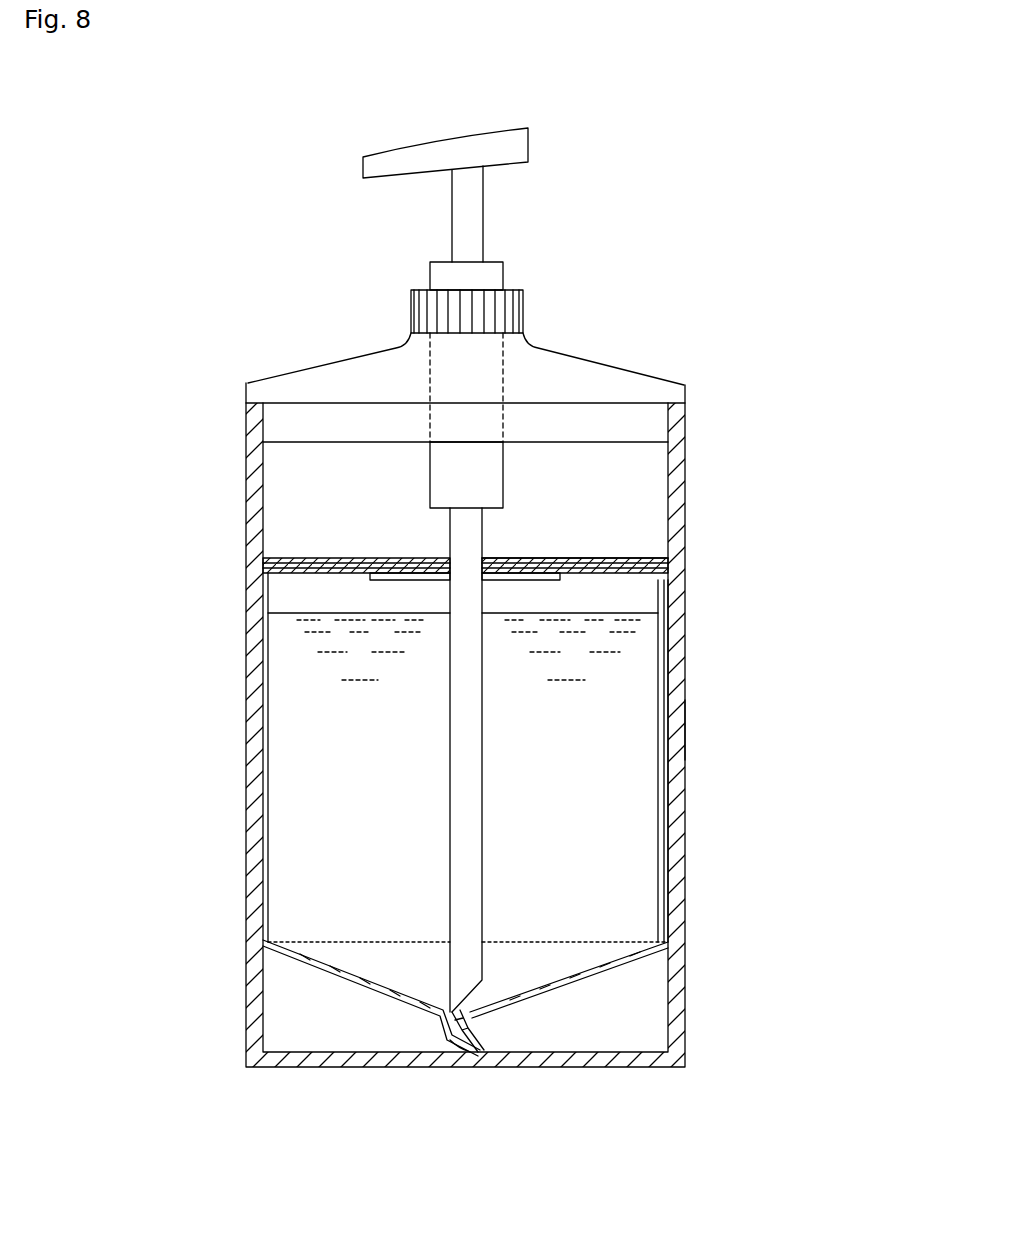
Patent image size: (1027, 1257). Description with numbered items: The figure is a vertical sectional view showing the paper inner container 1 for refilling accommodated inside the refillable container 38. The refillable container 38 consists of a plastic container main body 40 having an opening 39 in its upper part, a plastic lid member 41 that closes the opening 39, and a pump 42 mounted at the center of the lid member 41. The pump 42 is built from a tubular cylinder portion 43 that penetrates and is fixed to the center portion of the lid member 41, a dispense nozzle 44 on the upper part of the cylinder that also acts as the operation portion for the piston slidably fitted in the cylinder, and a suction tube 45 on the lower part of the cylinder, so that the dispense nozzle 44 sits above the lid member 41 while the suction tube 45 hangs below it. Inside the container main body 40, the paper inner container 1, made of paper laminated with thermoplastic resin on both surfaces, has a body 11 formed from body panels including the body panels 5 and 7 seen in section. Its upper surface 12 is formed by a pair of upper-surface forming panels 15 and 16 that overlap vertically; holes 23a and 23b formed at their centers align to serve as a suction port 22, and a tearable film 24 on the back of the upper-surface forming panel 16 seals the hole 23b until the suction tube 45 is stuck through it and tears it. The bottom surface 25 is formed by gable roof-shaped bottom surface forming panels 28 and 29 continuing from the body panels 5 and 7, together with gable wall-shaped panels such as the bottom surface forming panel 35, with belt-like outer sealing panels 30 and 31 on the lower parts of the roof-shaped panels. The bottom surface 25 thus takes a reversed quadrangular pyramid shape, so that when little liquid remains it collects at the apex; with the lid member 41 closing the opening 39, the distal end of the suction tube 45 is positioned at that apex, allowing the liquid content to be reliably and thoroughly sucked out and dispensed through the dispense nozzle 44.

The dispense nozzle 44 is at (404, 156).
The pump 42 is at (538, 286).
The lid member 41 is at (568, 368).
The refillable container 38 is at (648, 344).
The opening 39 is at (687, 404).
The container main body 40 is at (686, 520).
The tubular cylinder portion 43 is at (488, 480).
The suction tube 45 is at (470, 836).
The body panel 7 is at (268, 808).
The body panel 5 is at (656, 800).
The paper inner container 1 is at (686, 668).
The body 11 is at (676, 730).
The upper-surface forming panel 15 is at (310, 560).
The hole 23a is at (385, 572).
The suction port 22 is at (513, 548).
The hole 23b is at (435, 558).
The upper surface 12 is at (600, 556).
The upper-surface forming panel 16 is at (332, 580).
The film 24 is at (420, 580).
The gable wall-shaped bottom surface forming panel 35 is at (413, 950).
The gable roof-shaped bottom surface forming panel 29 is at (366, 970).
The bottom surface 25 is at (358, 996).
The gable roof-shaped bottom surface forming panel 28 is at (566, 975).
The outer sealing panel 30 is at (472, 1037).
The outer sealing panel 31 is at (452, 1052).